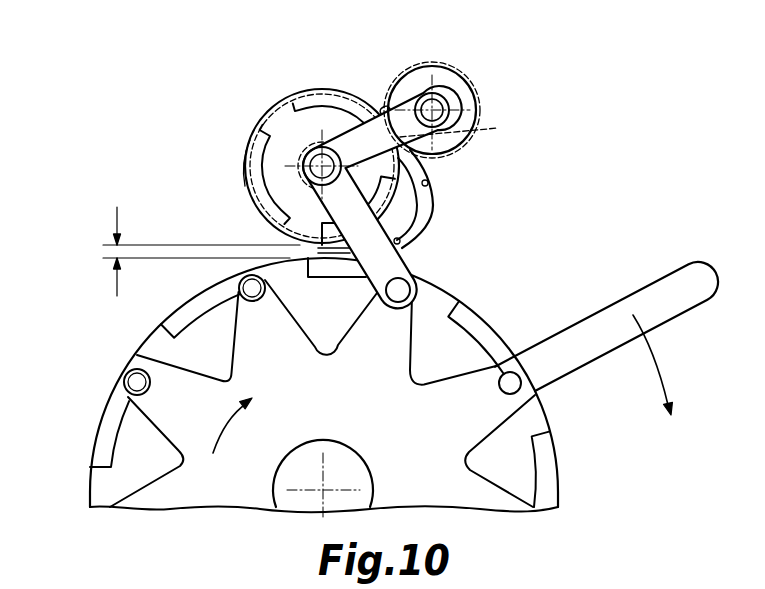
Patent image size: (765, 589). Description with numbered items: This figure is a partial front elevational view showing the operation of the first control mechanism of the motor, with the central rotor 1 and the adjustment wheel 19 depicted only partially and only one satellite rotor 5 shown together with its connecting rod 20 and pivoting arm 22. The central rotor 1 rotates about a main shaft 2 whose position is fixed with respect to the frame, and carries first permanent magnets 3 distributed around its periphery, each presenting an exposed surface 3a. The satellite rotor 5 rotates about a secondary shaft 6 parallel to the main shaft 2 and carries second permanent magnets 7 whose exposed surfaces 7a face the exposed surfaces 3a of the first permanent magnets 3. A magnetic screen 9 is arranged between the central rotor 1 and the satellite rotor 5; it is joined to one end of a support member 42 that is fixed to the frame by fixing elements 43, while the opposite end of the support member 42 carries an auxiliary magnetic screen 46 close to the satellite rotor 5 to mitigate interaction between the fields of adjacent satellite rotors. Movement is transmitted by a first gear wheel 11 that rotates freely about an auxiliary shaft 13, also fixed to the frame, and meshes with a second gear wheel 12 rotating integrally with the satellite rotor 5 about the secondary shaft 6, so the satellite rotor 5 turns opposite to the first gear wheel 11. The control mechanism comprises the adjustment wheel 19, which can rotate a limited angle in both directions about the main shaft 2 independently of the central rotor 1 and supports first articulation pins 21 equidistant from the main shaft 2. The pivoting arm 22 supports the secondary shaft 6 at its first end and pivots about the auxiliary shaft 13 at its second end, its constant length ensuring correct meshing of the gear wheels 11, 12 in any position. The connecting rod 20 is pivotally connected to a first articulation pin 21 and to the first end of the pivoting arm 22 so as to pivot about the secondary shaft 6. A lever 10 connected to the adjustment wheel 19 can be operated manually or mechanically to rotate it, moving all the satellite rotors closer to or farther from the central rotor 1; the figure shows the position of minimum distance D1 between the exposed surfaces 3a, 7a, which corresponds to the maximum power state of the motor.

The central rotor 1 is at (95, 485).
The main shaft 2 is at (342, 470).
The first permanent magnets 3 is at (110, 440).
The exposed surfaces of the first permanent magnets 3a is at (100, 414).
The satellite rotor 5 is at (313, 122).
The secondary shaft 6 is at (302, 154).
The second permanent magnets 7 is at (258, 150).
The exposed surfaces of the second permanent magnets 7a is at (242, 171).
The magnetic screen 9 is at (300, 245).
The lever 10 is at (648, 290).
The first gear wheel 11 is at (463, 93).
The second gear wheel 12 is at (297, 100).
The auxiliary shaft 13 is at (435, 91).
The adjustment wheel 19 is at (195, 392).
The connecting rod 20 is at (402, 250).
The first articulation pin 21 is at (398, 303).
The pivoting arm 22 is at (351, 136).
The support member 42 is at (433, 200).
The fixing elements 43 is at (430, 183).
The auxiliary magnetic screen 46 is at (456, 110).
The position of minimum distance D1 is at (183, 251).